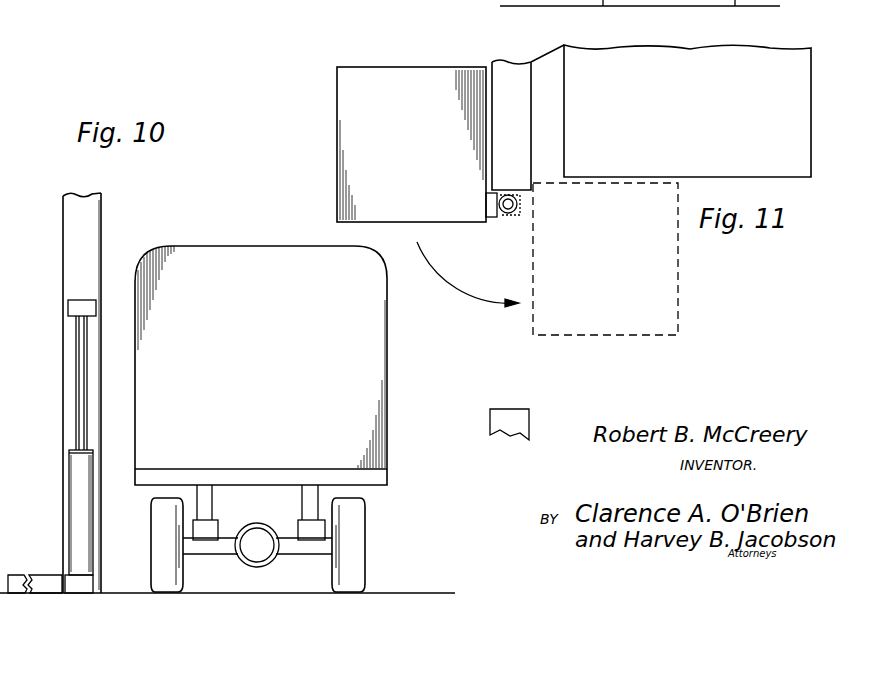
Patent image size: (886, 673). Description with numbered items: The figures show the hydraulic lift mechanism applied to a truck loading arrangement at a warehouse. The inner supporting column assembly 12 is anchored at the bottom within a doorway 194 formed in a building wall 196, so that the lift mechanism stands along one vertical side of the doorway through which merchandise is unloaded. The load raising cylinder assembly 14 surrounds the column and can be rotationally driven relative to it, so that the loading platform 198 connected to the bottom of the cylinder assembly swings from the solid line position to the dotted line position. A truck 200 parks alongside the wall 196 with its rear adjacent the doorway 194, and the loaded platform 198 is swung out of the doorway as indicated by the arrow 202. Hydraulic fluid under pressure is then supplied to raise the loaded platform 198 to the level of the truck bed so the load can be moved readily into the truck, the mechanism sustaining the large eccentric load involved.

In FIG. 10, the inner supporting column assembly 12 is at (68, 387).
In FIG. 10, the load raising cylinder assembly 14 is at (67, 508).
In FIG. 11, the doorway 194 is at (503, 413).
In FIG. 10, the building wall 196 is at (102, 244).
In FIG. 11, the building wall 196 is at (510, 83).
In FIG. 10, the loading platform 198 is at (49, 579).
In FIG. 11, the loading platform 198 is at (346, 133).
In FIG. 10, the truck 200 is at (215, 262).
In FIG. 11, the arrow 202 is at (489, 301).